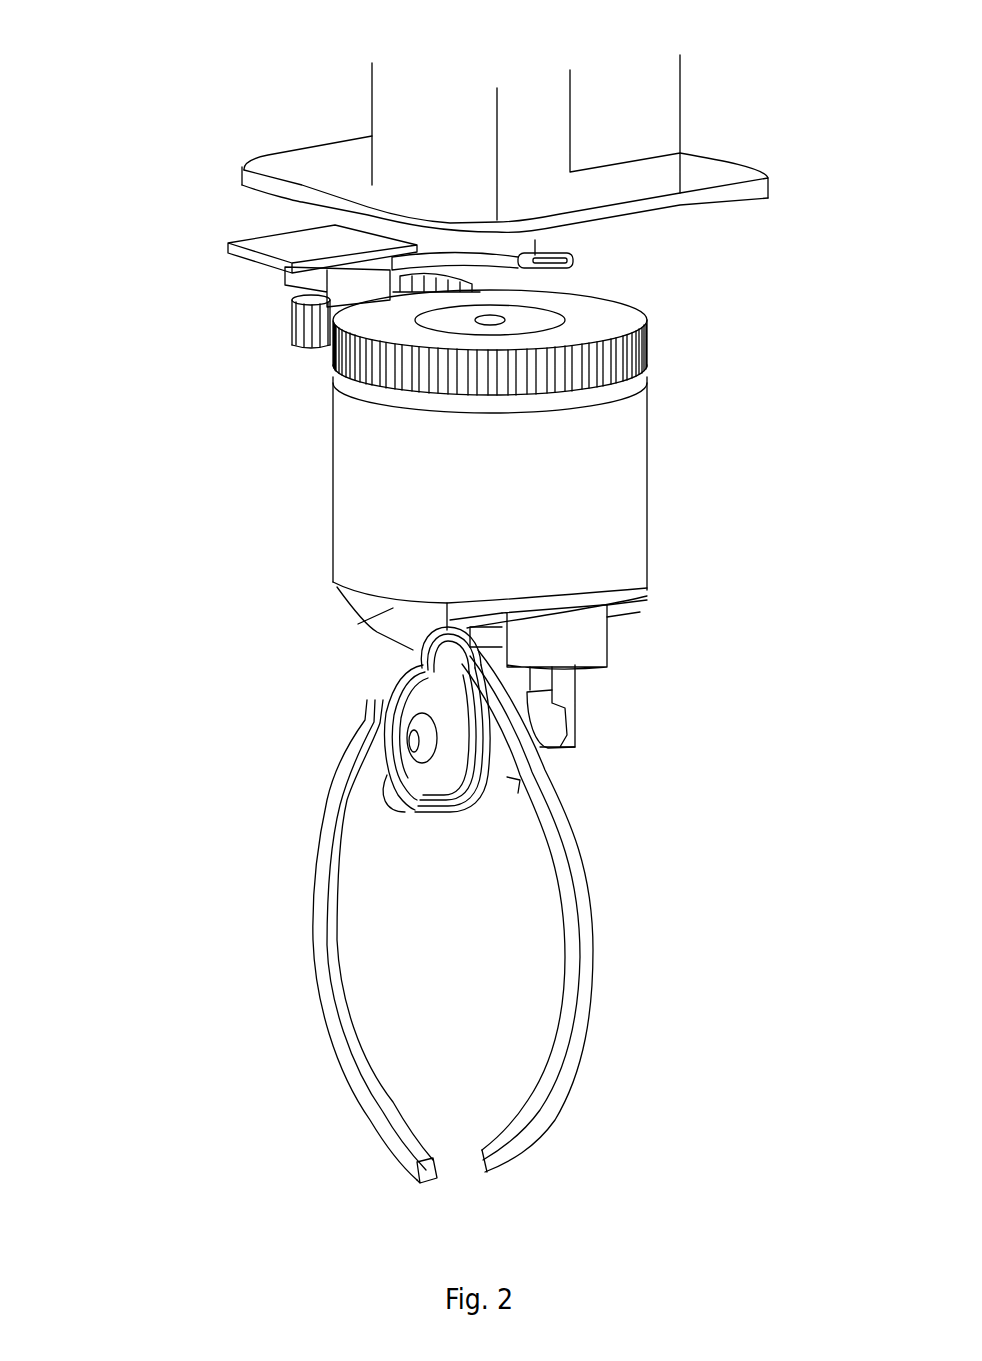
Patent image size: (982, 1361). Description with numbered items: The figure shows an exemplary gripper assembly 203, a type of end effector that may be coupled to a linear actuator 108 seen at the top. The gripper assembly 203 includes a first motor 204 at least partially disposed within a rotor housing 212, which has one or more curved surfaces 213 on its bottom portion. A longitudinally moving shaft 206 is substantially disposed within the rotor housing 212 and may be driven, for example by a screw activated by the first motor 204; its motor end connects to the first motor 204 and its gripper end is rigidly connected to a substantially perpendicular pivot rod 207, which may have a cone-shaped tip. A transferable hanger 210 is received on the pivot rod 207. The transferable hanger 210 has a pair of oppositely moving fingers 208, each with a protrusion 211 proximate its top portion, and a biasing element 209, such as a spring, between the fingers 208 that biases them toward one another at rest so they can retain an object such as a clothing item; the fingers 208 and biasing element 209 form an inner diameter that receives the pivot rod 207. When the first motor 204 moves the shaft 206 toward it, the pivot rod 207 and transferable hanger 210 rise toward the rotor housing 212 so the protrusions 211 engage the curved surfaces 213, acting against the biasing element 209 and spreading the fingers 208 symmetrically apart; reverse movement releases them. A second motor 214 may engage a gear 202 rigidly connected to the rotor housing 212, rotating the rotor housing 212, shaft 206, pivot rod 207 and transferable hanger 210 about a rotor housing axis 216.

The linear actuator 108 is at (633, 95).
The gear 202 is at (550, 319).
The gripper assembly 203 is at (177, 407).
The first motor 204 is at (587, 643).
The shaft 206 is at (567, 690).
The pivot rod 207 is at (560, 737).
The fingers 208 is at (313, 933).
The biasing element 209 is at (463, 830).
The transferable hanger 210 is at (215, 822).
The protrusion 211 is at (407, 667).
The rotor housing 212 is at (697, 450).
The curved surfaces 213 is at (410, 651).
The second motor 214 is at (303, 327).
The rotor housing axis 216 is at (547, 315).